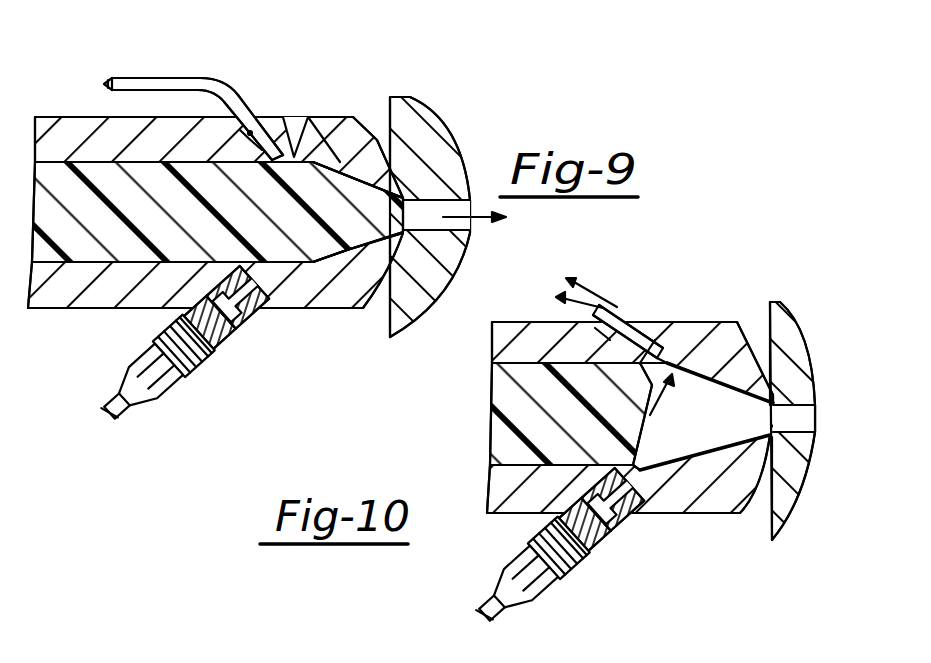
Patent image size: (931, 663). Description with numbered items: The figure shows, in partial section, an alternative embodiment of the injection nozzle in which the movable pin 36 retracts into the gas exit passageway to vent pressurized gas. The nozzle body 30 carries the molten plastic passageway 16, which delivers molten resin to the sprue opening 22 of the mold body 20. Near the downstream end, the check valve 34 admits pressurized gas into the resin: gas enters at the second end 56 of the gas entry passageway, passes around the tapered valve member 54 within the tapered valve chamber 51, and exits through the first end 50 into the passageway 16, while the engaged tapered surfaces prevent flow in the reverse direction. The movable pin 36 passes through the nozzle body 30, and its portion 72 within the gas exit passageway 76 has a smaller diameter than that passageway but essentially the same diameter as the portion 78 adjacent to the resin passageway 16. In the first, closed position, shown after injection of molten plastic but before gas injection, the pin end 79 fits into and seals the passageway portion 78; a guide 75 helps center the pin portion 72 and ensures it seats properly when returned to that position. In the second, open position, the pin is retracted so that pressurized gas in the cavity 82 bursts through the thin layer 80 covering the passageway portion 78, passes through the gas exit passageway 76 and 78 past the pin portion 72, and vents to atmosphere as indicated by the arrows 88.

In FIG. 9, the molten plastic passageway 16 is at (27, 216).
In FIG. 10, the molten plastic passageway 16 is at (493, 443).
In FIG. 9, the mold body 20 is at (417, 110).
In FIG. 10, the mold body 20 is at (792, 488).
In FIG. 9, the sprue opening 22 is at (447, 153).
In FIG. 10, the sprue opening 22 is at (815, 462).
In FIG. 9, the nozzle body 30 is at (47, 133).
In FIG. 10, the nozzle body 30 is at (503, 483).
In FIG. 9, the check valve 34 is at (205, 370).
In FIG. 10, the check valve 34 is at (580, 573).
In FIG. 9, the movable pin 36 is at (142, 78).
In FIG. 9, the first end of the gas entry passageway 50 is at (287, 300).
In FIG. 10, the first end of the gas entry passageway 50 is at (693, 513).
In FIG. 9, the tapered valve chamber 51 is at (257, 310).
In FIG. 10, the tapered valve chamber 51 is at (640, 517).
In FIG. 9, the tapered valve member 54 is at (247, 312).
In FIG. 10, the tapered valve member 54 is at (623, 523).
In FIG. 9, the second end of the gas entry passageway 56 is at (222, 312).
In FIG. 10, the second end of the gas entry passageway 56 is at (607, 533).
In FIG. 9, the pin portion 72 is at (247, 118).
In FIG. 10, the pin portion 72 is at (624, 300).
In FIG. 9, the guide 75 is at (263, 120).
In FIG. 10, the guide 75 is at (637, 327).
In FIG. 9, the gas exit passageway 76 is at (240, 130).
In FIG. 10, the gas exit passageway 76 is at (595, 328).
In FIG. 9, the gas exit passageway portion 78 is at (300, 152).
In FIG. 10, the gas exit passageway portion 78 is at (715, 325).
In FIG. 9, the pin end 79 is at (298, 150).
In FIG. 10, the pin end 79 is at (655, 340).
In FIG. 10, the thin layer 80 is at (815, 445).
In FIG. 10, the cavity 82 is at (742, 420).
In FIG. 10, the arrows 88 is at (638, 400).